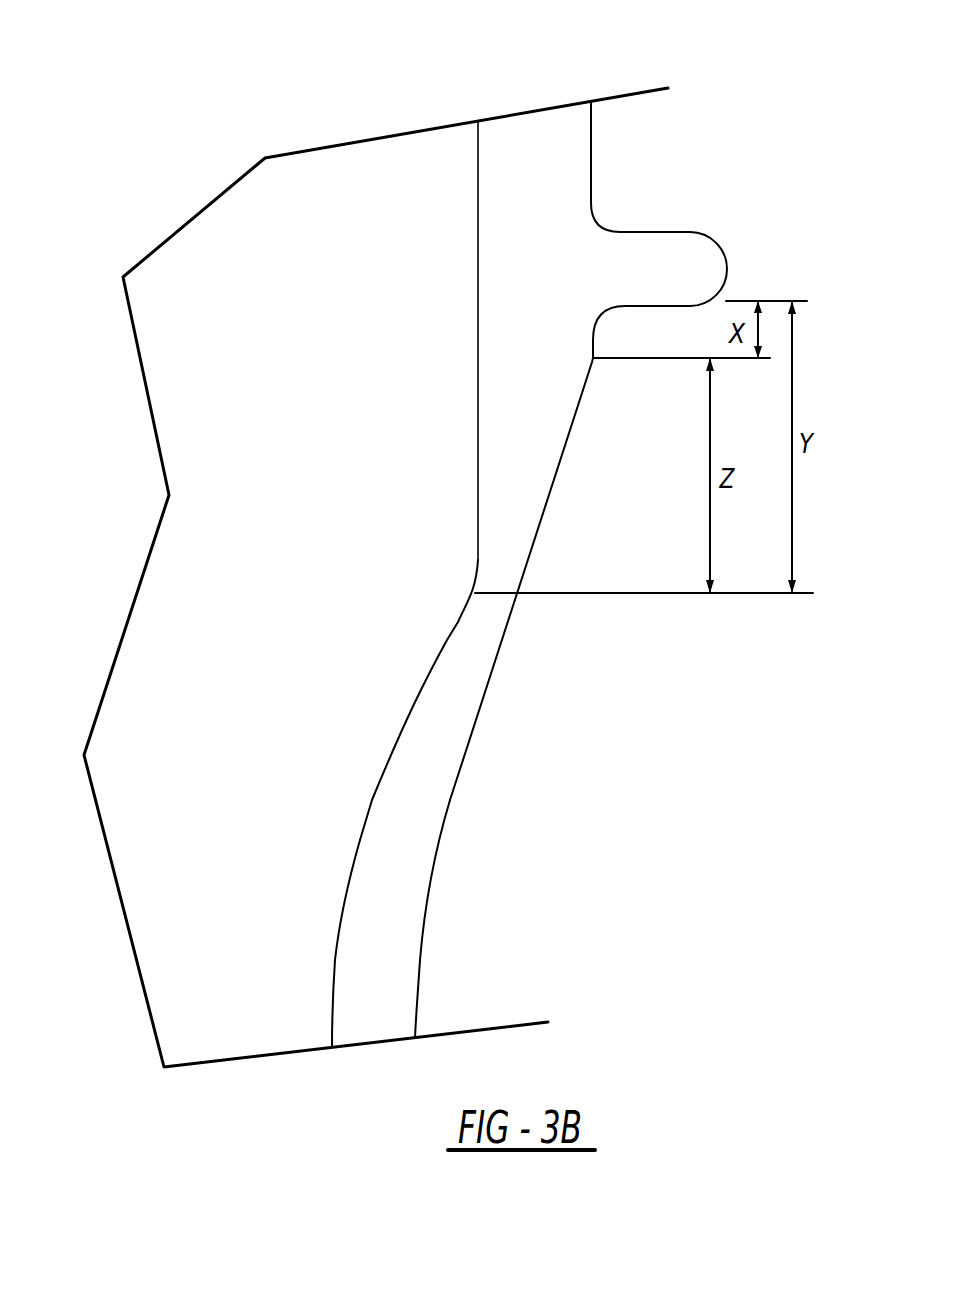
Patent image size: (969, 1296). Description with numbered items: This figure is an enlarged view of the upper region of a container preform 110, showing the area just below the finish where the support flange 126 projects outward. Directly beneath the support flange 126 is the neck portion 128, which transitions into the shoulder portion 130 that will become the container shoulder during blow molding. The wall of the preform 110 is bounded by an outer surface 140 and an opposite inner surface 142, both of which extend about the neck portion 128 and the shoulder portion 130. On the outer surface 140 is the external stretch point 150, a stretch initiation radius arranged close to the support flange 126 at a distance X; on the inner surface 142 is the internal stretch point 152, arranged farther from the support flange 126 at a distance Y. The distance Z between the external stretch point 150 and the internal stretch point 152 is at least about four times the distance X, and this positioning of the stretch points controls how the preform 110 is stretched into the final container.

The container preform 110 is at (452, 62).
The support flange 126 is at (727, 268).
The neck portion 128 is at (522, 462).
The shoulder portion 130 is at (440, 703).
The outer surface 140 is at (420, 958).
The inner surface 142 is at (335, 958).
The external stretch point 150 is at (592, 364).
The internal stretch point 152 is at (473, 570).